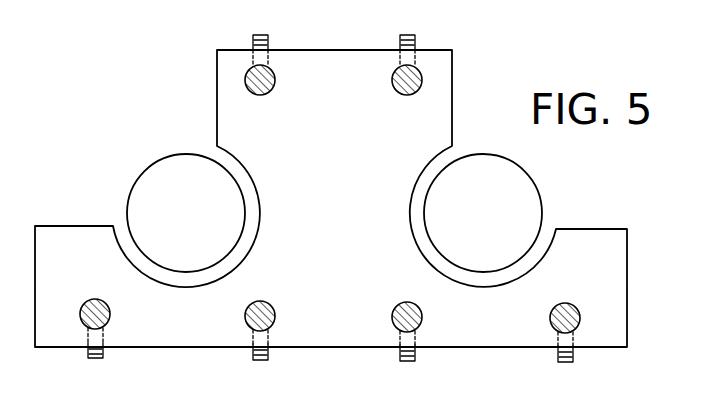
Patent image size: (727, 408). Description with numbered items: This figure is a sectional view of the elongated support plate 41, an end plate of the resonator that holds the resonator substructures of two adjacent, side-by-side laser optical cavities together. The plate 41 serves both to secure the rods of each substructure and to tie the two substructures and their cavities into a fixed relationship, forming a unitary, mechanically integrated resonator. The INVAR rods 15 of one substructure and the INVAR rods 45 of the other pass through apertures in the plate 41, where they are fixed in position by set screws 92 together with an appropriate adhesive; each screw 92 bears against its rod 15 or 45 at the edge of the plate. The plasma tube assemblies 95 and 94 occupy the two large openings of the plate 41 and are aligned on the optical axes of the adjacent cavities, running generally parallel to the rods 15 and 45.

The elongated support plate 41 is at (347, 170).
The plasma tube assembly 95 is at (176, 223).
The plasma tube assembly 94 is at (479, 223).
The INVAR rod 15 is at (248, 69).
The INVAR rod 45 is at (421, 69).
The set screw 92 is at (264, 35).